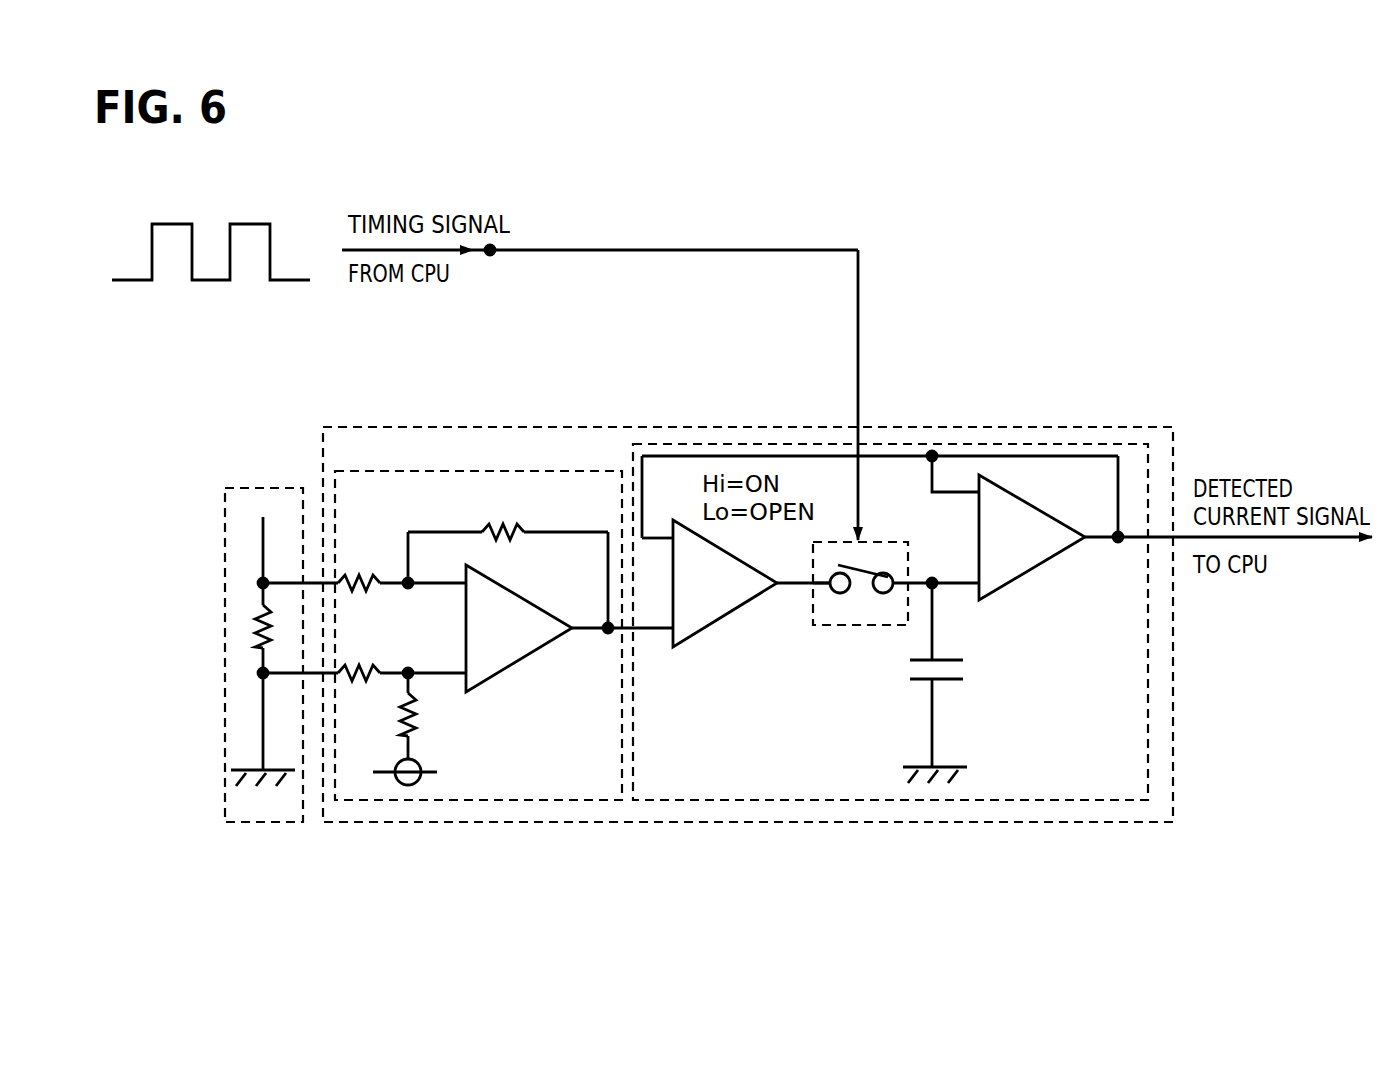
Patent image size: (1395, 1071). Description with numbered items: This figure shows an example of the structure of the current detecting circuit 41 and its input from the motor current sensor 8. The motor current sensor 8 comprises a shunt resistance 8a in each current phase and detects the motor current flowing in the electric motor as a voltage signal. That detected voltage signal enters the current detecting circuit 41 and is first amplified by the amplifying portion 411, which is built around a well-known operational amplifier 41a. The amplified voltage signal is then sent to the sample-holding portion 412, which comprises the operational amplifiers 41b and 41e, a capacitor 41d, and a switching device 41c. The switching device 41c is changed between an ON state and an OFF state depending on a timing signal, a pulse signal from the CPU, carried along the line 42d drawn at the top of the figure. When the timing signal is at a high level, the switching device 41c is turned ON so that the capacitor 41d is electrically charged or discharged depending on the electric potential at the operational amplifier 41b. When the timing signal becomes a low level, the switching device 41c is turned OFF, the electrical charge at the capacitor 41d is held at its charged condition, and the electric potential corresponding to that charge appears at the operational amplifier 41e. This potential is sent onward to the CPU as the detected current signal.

The motor current sensor 8 is at (225, 745).
The shunt resistance 8a is at (258, 637).
The current detecting circuit 41 is at (1175, 735).
The amplifying portion 411 is at (487, 800).
The sample-holding portion 412 is at (824, 800).
The operational amplifier 41a is at (512, 664).
The operational amplifier 41b is at (718, 619).
The switching device 41c is at (862, 627).
The capacitor 41d is at (958, 680).
The operational amplifier 41e is at (1025, 574).
The timing signal line from CPU 42d is at (858, 322).